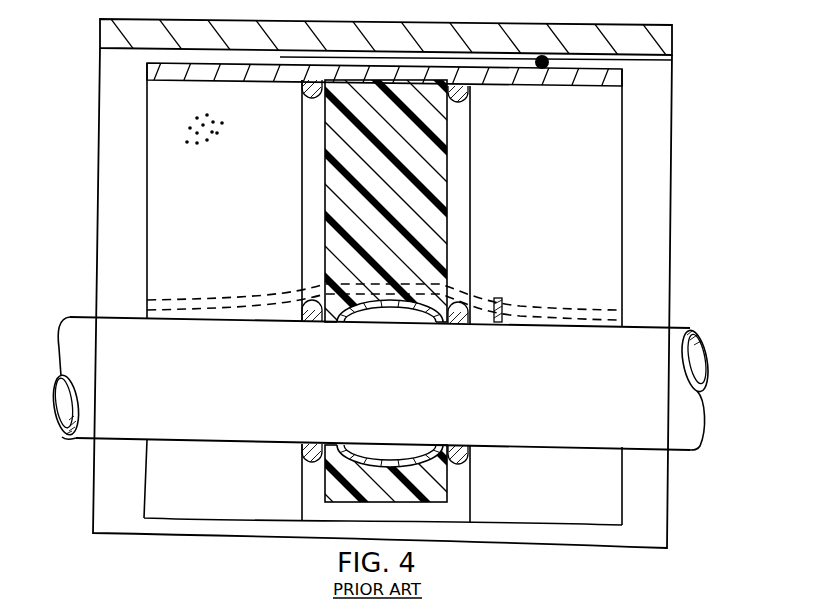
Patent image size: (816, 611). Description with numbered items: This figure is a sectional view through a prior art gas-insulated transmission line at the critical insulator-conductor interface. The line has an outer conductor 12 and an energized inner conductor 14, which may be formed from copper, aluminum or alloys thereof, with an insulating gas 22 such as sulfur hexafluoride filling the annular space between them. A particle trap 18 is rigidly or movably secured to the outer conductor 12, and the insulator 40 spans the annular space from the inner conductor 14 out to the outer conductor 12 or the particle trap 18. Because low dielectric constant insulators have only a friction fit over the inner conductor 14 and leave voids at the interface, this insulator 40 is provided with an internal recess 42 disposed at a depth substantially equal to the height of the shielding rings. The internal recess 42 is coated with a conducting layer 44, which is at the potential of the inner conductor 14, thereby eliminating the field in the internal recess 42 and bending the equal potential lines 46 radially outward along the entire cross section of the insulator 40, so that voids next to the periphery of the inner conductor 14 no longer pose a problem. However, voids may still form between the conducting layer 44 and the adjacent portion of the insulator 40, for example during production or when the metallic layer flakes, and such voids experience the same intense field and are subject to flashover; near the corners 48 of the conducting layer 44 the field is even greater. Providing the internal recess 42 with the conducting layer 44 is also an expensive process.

The outer conductor 12 is at (100, 33).
The inner conductor 14 is at (85, 325).
The particle trap 18 is at (533, 78).
The insulating gas 22 is at (210, 134).
The insulator 40 is at (417, 203).
The internal recess 42 is at (360, 323).
The conducting layer 44 is at (385, 311).
The equal potential lines 46 is at (499, 300).
The corners 48 is at (447, 323).